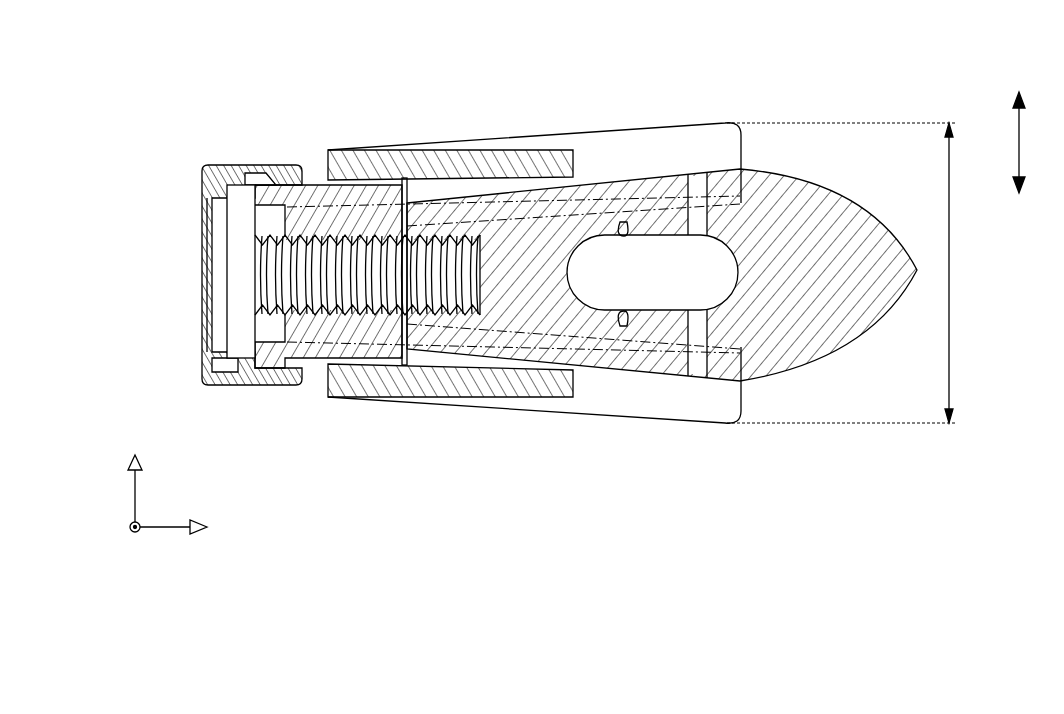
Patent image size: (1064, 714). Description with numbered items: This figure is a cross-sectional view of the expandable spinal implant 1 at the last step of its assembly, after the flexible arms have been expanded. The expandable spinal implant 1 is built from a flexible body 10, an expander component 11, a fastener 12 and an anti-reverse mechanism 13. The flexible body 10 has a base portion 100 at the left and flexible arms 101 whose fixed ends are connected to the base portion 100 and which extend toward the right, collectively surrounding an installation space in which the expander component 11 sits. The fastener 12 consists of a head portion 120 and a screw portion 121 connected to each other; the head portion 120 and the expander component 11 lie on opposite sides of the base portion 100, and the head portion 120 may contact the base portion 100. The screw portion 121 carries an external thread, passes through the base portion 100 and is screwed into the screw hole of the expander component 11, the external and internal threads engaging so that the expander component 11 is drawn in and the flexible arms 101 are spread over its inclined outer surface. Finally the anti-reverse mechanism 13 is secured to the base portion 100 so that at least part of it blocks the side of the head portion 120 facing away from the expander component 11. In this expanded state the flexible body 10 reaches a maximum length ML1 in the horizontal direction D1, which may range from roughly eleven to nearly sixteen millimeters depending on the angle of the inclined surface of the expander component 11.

The expandable spinal implant 1 is at (137, 52).
The anti-reverse mechanism 13 is at (215, 163).
The fastener 12 is at (280, 271).
The head portion 120 is at (242, 243).
The screw portion 121 is at (305, 273).
The flexible body 10 is at (498, 316).
The base portion 100 is at (289, 384).
The flexible arm 101 is at (534, 300).
The expander component 11 is at (833, 222).
The horizontal direction D1 is at (1035, 142).
The maximum length ML1 is at (868, 273).